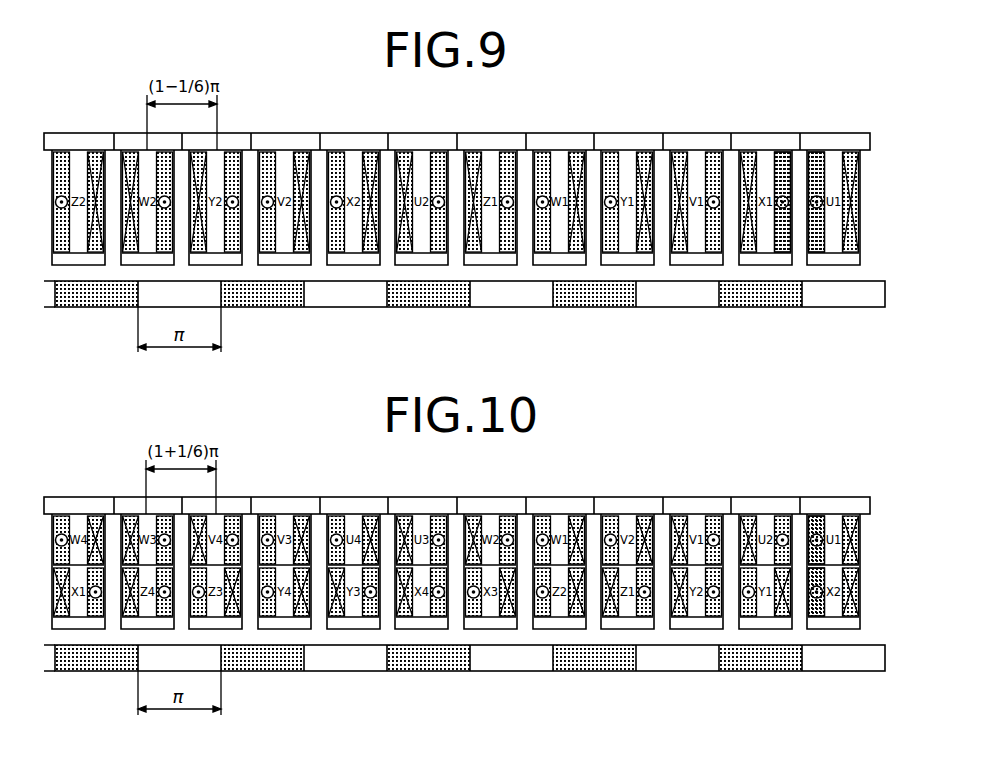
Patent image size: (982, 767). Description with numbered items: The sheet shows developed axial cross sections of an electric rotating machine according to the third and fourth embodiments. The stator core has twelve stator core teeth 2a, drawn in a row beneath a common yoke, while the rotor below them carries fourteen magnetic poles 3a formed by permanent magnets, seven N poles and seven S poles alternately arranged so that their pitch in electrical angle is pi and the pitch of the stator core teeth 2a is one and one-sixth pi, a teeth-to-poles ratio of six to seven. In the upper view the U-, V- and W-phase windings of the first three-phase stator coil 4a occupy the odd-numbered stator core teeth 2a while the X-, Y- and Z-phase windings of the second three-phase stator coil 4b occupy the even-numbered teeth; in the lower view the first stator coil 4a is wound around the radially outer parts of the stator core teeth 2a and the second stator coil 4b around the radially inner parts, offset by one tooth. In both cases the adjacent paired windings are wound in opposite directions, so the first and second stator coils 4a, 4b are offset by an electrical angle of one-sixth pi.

In FIG. 9, the stator core teeth 2a is at (283, 167).
In FIG. 10, the stator core teeth 2a is at (283, 527).
In FIG. 9, the magnetic poles 3a is at (403, 302).
In FIG. 10, the magnetic poles 3a is at (485, 670).
In FIG. 9, the first three-phase stator coil 4a is at (816, 160).
In FIG. 10, the first three-phase stator coil 4a is at (815, 521).
In FIG. 9, the second three-phase stator coil 4b is at (783, 253).
In FIG. 10, the second three-phase stator coil 4b is at (818, 617).